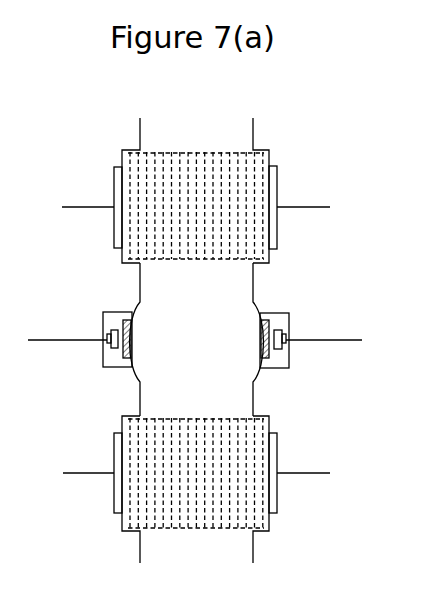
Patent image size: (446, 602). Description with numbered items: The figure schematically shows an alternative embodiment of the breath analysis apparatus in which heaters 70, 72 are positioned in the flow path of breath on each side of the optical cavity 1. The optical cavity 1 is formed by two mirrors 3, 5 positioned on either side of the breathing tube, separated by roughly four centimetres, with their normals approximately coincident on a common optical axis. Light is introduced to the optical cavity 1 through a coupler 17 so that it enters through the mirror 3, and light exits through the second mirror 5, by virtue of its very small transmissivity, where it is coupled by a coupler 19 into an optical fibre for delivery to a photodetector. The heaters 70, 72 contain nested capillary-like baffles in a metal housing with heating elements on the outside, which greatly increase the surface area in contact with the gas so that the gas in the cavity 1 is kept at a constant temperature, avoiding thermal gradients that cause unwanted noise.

The optical cavity 1 is at (207, 356).
The mirror 3 is at (80, 348).
The second mirror 5 is at (311, 343).
The coupler 17 is at (105, 337).
The coupler 19 is at (288, 338).
The heater 70 is at (206, 179).
The heater 72 is at (211, 486).